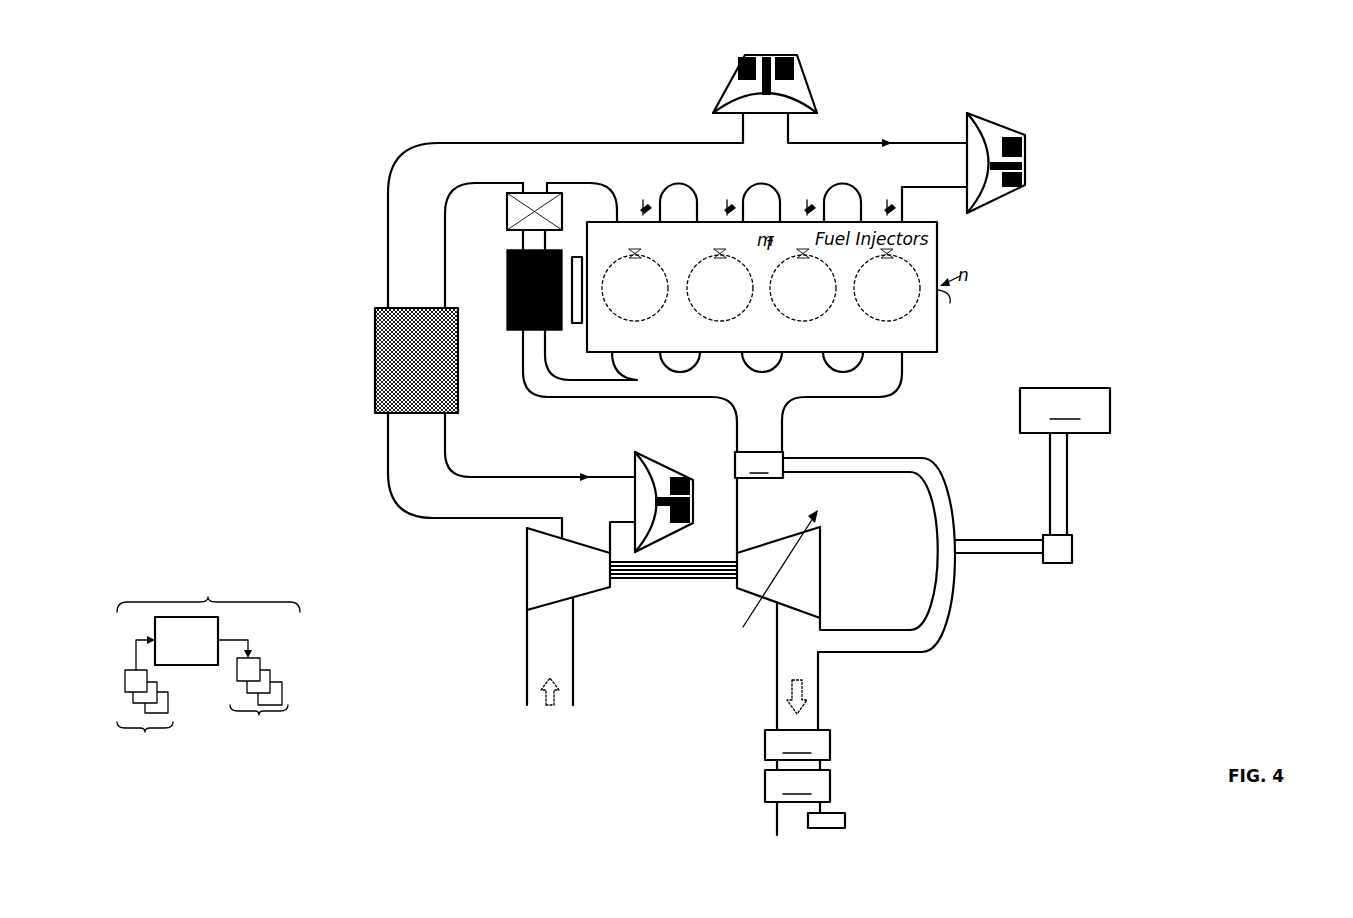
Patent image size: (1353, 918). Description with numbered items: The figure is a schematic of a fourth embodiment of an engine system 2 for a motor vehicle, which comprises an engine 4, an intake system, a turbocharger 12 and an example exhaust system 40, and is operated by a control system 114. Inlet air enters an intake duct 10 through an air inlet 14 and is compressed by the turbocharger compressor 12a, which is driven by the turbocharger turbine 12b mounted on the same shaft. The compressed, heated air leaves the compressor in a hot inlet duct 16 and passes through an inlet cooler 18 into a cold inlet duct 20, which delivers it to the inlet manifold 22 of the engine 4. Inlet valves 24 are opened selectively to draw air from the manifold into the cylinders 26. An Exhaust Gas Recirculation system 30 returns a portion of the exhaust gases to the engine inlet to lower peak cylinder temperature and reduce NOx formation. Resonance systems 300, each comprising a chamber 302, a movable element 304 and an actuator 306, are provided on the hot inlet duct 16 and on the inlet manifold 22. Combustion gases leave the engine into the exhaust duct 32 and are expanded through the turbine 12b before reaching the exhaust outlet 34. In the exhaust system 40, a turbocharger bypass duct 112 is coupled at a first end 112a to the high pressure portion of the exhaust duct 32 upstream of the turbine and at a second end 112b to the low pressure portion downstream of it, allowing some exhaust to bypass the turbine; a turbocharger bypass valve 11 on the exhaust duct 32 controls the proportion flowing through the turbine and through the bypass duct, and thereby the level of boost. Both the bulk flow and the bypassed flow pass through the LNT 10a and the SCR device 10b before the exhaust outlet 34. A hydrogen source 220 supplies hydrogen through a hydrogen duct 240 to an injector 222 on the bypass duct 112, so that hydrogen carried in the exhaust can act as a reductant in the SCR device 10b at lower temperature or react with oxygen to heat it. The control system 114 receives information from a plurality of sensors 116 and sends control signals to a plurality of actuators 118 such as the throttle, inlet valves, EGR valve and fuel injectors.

The engine system 2 is at (365, 107).
The engine 4 is at (888, 103).
The intake duct 10 is at (526, 628).
The LNT 10a is at (797, 745).
The SCR device 10b is at (797, 786).
The turbocharger bypass valve 11 is at (759, 465).
The turbocharger 12 is at (673, 586).
The turbocharger compressor 12a is at (590, 597).
The turbocharger turbine 12b is at (758, 571).
The air inlet 14 is at (576, 680).
The hot inlet duct 16 is at (430, 520).
The inlet cooler 18 is at (375, 400).
The cold inlet duct 20 is at (471, 142).
The inlet manifold 22 is at (598, 142).
The inlet valves 24 is at (730, 203).
The cylinders 26 is at (680, 297).
The Exhaust Gas Recirculation system 30 is at (540, 483).
The exhaust duct 32 is at (783, 443).
The exhaust outlet 34 is at (822, 688).
The exhaust system 40 is at (1046, 532).
The turbocharger bypass duct 112 is at (893, 560).
The first end 112a is at (785, 476).
The second end 112b is at (822, 620).
The control system 114 is at (208, 657).
The sensors 116 is at (149, 703).
The actuators 118 is at (258, 698).
The hydrogen source 220 is at (1065, 410).
The injector 222 is at (1073, 556).
The hydrogen duct 240 is at (1068, 505).
The resonance system 300 is at (847, 276).
The chamber 302 is at (737, 73).
The movable element 304 is at (735, 100).
The actuator 306 is at (857, 279).